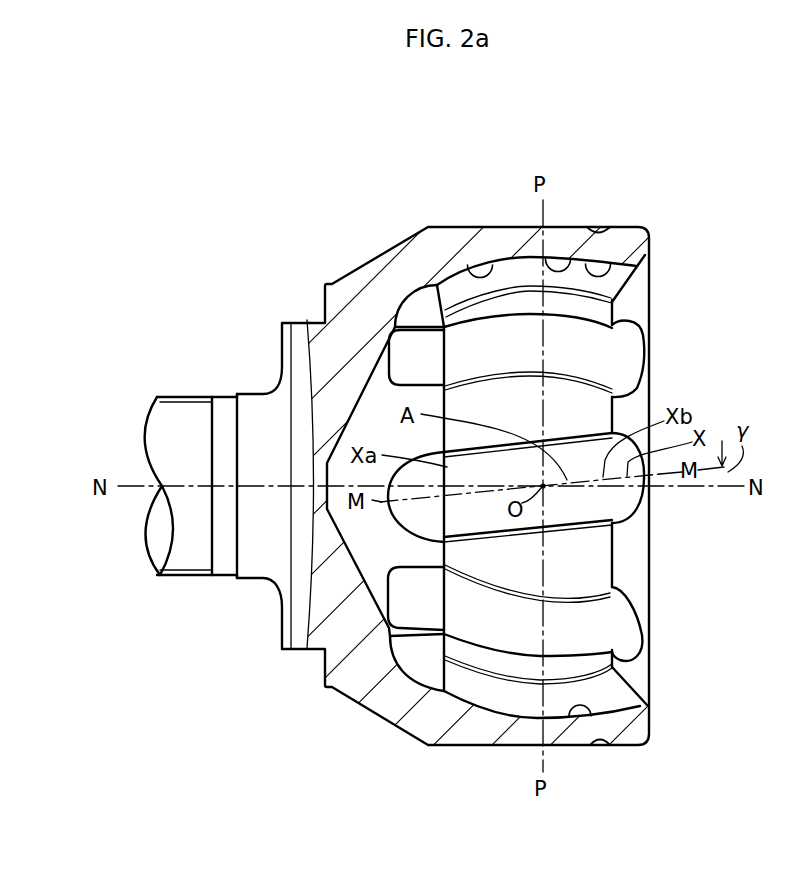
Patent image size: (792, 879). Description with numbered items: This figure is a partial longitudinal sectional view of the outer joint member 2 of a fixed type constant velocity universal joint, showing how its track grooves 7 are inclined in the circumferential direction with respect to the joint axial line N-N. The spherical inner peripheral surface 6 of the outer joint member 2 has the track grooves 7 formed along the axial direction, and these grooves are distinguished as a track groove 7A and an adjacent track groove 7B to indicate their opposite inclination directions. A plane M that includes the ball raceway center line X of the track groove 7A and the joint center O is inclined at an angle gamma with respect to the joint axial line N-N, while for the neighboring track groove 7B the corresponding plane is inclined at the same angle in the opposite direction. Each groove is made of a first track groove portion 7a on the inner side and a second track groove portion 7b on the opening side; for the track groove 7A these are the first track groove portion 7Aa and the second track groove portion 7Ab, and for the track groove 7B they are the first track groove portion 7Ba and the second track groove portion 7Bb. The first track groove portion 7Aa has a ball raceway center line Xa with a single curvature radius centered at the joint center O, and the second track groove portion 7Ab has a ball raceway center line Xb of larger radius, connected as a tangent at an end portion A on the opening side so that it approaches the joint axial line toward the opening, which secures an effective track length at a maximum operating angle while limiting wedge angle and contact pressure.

The outer joint member 2 is at (505, 227).
The spherical inner peripheral surface 6 is at (594, 408).
The track grooves 7 is at (550, 480).
The track groove 7A is at (567, 266).
The track groove 7B is at (627, 335).
The first track groove portion 7a is at (420, 480).
The second track groove portion 7b is at (693, 435).
The first track groove portion 7Aa is at (477, 276).
The second track groove portion 7Ab is at (601, 272).
The first track groove portion 7Ba is at (462, 615).
The second track groove portion 7Bb is at (628, 650).